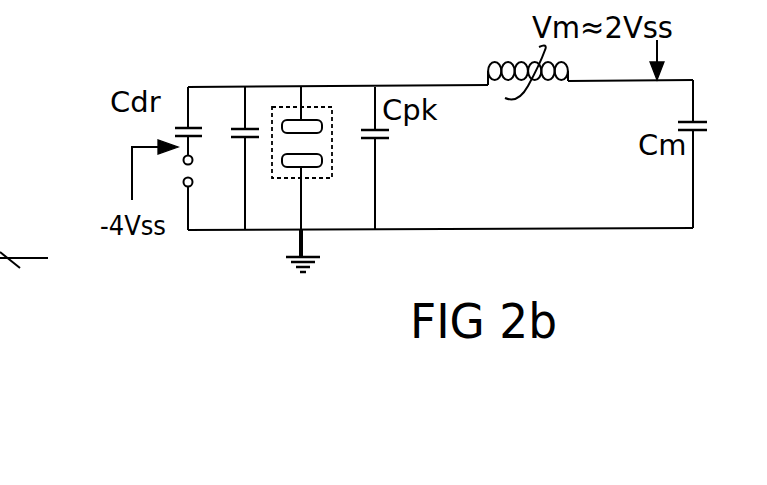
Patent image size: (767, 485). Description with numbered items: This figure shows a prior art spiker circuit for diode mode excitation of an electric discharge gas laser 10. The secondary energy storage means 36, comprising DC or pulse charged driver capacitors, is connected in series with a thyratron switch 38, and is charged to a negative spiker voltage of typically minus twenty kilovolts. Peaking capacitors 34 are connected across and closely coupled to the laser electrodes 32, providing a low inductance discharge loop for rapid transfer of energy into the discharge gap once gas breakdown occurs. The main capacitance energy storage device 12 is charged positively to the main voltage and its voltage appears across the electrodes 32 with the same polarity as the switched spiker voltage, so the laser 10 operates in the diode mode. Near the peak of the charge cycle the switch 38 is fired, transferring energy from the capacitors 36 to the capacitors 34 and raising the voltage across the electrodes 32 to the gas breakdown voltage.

The electric discharge gas laser 10 is at (321, 131).
The main capacitance energy storage device 12 is at (698, 117).
The electrodes 32 is at (322, 127).
The capacitors Cpk 34 is at (240, 138).
The secondary energy storage means 36 is at (195, 129).
The thyratron switch 38 is at (199, 188).